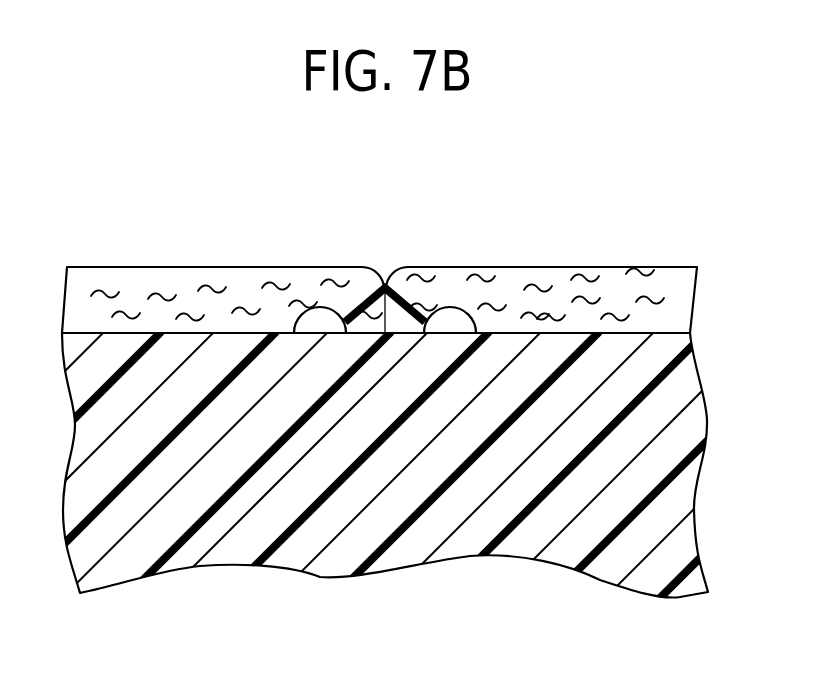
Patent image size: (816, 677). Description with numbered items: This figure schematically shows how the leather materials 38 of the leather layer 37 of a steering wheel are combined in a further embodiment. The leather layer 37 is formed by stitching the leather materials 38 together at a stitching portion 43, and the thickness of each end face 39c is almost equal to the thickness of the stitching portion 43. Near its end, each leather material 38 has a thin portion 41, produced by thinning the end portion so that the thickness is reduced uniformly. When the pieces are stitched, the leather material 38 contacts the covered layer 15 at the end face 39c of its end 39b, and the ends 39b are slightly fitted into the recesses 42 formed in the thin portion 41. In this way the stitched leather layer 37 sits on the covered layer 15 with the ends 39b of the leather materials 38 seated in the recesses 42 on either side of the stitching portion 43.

The covered layer 15 is at (683, 513).
The leather layer 37 is at (416, 252).
The leather material 38 is at (122, 280).
The end of the leather material 39b is at (405, 312).
The end face 39c is at (402, 333).
The thin portion 41 is at (316, 305).
The recess 42 is at (318, 323).
The stitching portion 43 is at (347, 290).